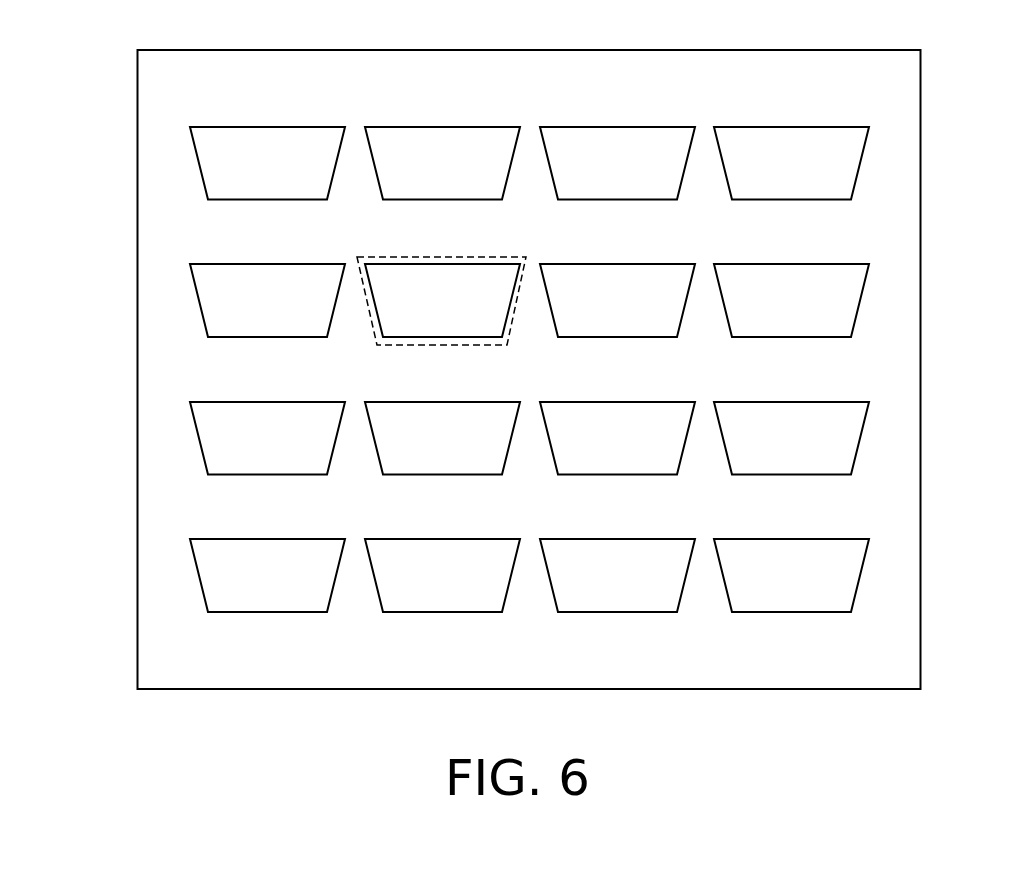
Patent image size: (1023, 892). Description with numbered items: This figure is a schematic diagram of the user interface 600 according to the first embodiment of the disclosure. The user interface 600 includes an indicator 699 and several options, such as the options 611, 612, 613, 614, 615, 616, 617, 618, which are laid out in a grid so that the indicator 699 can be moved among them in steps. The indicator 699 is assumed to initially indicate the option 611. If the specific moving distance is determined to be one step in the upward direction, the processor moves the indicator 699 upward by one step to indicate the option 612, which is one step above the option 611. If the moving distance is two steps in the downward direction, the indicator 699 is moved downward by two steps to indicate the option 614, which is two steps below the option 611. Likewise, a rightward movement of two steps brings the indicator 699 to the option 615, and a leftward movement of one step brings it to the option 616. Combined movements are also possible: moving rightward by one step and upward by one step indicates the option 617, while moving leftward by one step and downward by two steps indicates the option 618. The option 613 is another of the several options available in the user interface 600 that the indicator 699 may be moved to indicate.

The user interface 600 is at (921, 600).
The option 611 is at (463, 314).
The option 612 is at (463, 176).
The option 613 is at (463, 450).
The option 614 is at (463, 589).
The option 615 is at (813, 314).
The option 616 is at (288, 314).
The option 617 is at (639, 176).
The option 618 is at (288, 589).
The indicator 699 is at (518, 257).